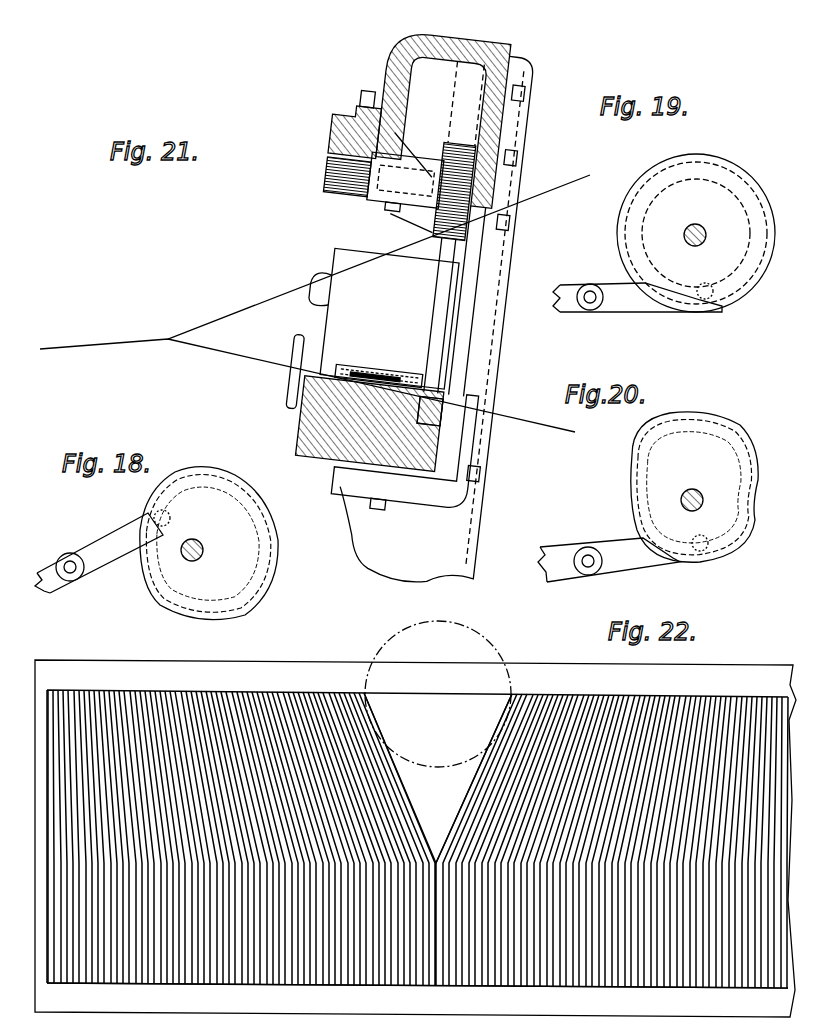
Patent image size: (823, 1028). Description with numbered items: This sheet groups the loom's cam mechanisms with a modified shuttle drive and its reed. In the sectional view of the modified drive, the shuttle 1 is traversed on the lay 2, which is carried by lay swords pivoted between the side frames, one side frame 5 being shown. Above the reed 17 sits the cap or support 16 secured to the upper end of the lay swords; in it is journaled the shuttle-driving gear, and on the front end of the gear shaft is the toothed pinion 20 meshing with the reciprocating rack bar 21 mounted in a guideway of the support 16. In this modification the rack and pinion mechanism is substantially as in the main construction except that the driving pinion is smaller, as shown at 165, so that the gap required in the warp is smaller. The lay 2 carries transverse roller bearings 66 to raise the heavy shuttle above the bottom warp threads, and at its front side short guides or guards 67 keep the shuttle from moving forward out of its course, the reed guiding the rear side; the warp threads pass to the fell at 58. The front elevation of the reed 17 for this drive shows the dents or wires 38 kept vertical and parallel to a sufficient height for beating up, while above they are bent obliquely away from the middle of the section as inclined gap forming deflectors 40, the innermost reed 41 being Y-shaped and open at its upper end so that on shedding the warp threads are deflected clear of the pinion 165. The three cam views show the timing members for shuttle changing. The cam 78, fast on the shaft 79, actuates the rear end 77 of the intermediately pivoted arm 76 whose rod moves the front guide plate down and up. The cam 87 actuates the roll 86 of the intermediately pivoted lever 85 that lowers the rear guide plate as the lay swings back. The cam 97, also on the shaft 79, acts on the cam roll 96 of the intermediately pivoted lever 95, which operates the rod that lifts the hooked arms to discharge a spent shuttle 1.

In FIG. 21, the shuttle 1 is at (352, 288).
In FIG. 21, the lay 2 is at (320, 450).
In FIG. 21, the side frame 5 is at (458, 563).
In FIG. 21, the cap or support 16 is at (474, 47).
In FIG. 22, the reed 17 is at (42, 662).
In FIG. 21, the toothed pinion 20 is at (333, 180).
In FIG. 21, the rack bar 21 is at (340, 145).
In FIG. 22, the dents or wires 38 is at (648, 963).
In FIG. 22, the inclined gap forming deflectors 40 is at (728, 722).
In FIG. 22, the innermost reed 41 is at (396, 782).
In FIG. 21, the fell 58 is at (168, 338).
In FIG. 21, the transverse roller bearings 66 is at (378, 378).
In FIG. 21, the guides or guards 67 is at (313, 346).
In FIG. 19, the intermediately pivoted arm 76 is at (570, 312).
In FIG. 19, the rear end of arm 77 is at (712, 298).
In FIG. 19, the cam 78 is at (745, 167).
In FIG. 19, the shaft 79 is at (707, 234).
In FIG. 20, the shaft 79 is at (692, 489).
In FIG. 18, the shaft 79 is at (203, 558).
In FIG. 20, the intermediately pivoted lever 85 is at (555, 552).
In FIG. 20, the roll 86 is at (708, 551).
In FIG. 20, the cam 87 is at (746, 520).
In FIG. 18, the intermediately pivoted lever 95 is at (50, 560).
In FIG. 18, the cam roll 96 is at (171, 518).
In FIG. 18, the cam 97 is at (276, 528).
In FIG. 21, the driving pinion 165 is at (452, 147).
In FIG. 22, the driving pinion 165 is at (490, 639).